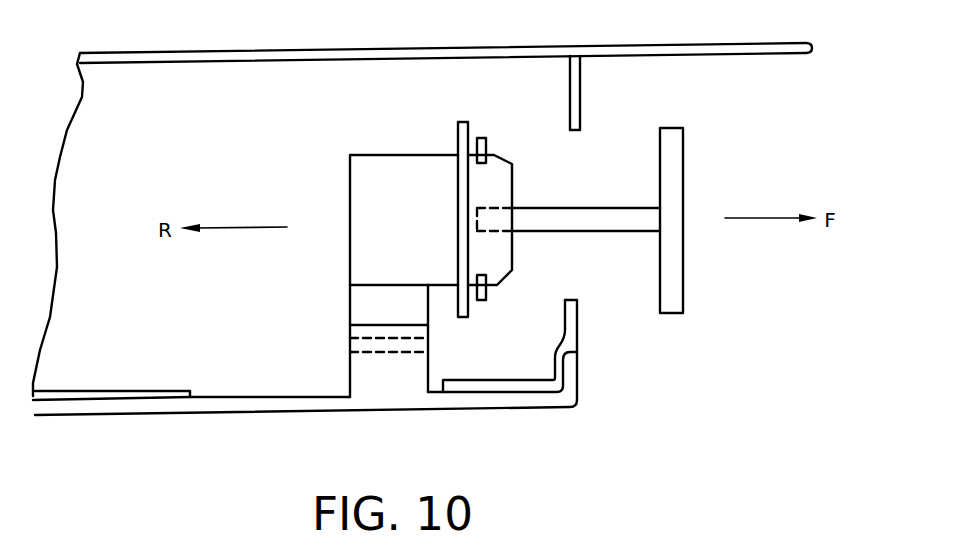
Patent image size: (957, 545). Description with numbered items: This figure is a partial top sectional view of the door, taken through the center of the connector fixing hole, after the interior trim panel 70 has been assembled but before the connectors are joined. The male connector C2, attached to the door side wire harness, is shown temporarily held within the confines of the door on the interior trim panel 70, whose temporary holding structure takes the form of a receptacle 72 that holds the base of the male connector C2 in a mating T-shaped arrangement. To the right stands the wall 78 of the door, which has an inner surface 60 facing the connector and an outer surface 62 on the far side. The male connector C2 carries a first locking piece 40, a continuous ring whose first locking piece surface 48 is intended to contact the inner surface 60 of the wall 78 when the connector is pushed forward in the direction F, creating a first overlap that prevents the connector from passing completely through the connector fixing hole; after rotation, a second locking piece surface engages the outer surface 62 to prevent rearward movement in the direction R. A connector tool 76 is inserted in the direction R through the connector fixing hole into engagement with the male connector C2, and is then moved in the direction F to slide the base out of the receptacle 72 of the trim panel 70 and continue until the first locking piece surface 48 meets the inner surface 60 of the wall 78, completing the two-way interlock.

The first locking piece 40 is at (458, 122).
The first locking piece surface 48 is at (481, 138).
The inner surface 60 is at (570, 93).
The outer surface 62 is at (580, 97).
The interior trim panel 70 is at (293, 408).
The receptacle 72 is at (385, 347).
The connector tool 76 is at (683, 147).
The wall 78 is at (580, 118).
The male connector C2 is at (354, 144).